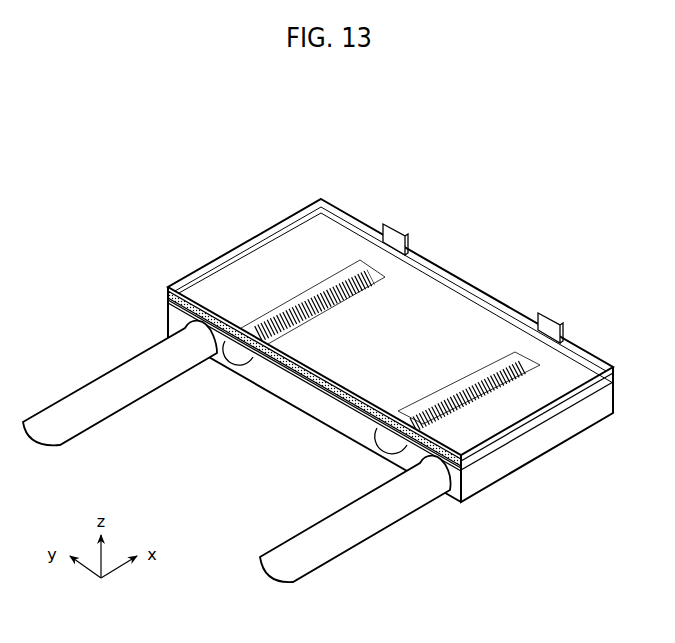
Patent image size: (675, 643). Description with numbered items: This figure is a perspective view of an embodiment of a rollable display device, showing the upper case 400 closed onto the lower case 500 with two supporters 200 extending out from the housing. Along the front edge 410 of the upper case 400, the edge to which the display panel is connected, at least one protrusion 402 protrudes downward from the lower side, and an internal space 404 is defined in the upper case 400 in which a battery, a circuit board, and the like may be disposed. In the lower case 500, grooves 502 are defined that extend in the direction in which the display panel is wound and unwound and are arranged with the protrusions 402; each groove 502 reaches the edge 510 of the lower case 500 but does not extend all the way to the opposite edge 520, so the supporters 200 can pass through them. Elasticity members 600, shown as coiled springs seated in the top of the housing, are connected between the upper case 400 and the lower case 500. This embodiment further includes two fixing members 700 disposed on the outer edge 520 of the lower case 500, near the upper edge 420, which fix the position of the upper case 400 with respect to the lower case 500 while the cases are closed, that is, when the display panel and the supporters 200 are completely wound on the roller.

The supporter 200 is at (85, 395).
The upper case 400 is at (447, 271).
The protrusion 402 is at (232, 345).
The internal space 404 is at (345, 405).
The edge 410 is at (308, 380).
The edge 420 is at (506, 303).
The lower case 500 is at (174, 323).
The groove 502 is at (224, 359).
The edge 510 is at (255, 392).
The edge 520 is at (572, 359).
The elasticity member 600 is at (263, 325).
The fixing member 700 is at (394, 226).